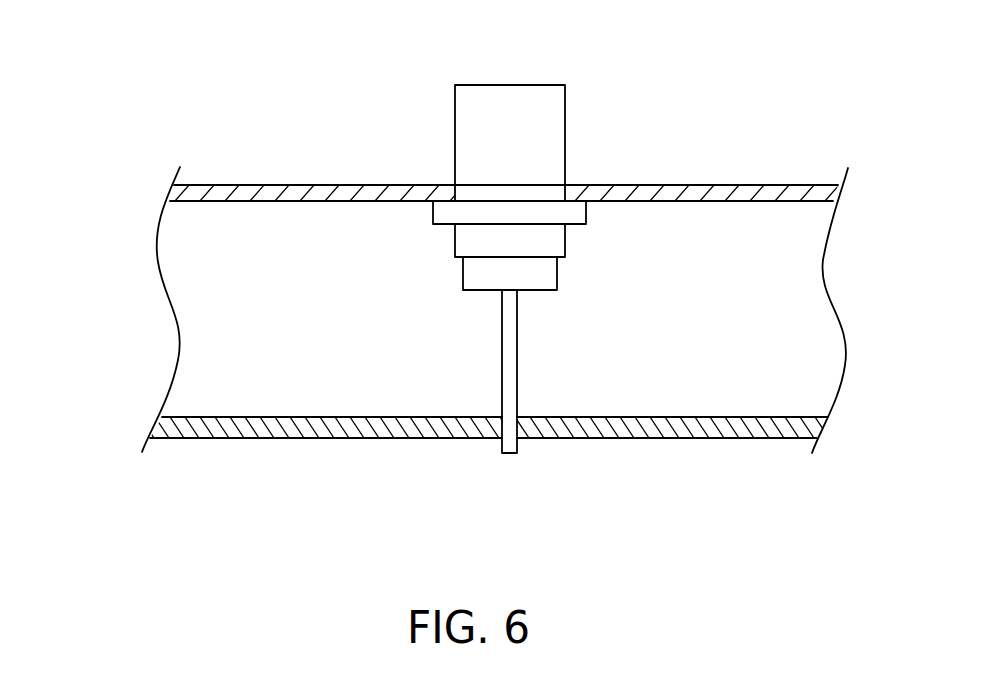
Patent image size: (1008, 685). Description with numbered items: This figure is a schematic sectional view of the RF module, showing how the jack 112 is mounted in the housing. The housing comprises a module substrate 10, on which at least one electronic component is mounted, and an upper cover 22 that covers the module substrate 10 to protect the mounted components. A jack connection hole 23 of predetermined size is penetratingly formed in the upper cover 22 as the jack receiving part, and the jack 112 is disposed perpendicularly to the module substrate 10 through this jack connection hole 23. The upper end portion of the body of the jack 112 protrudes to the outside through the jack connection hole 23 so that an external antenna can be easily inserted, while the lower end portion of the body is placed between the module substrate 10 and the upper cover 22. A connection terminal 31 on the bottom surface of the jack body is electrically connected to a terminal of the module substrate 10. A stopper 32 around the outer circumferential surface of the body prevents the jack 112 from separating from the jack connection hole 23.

The module substrate 10 is at (780, 430).
The upper cover 22 is at (807, 185).
The jack connection hole 23 is at (467, 190).
The connection terminal 31 is at (517, 370).
The stopper 32 is at (445, 213).
The jack 112 is at (543, 145).